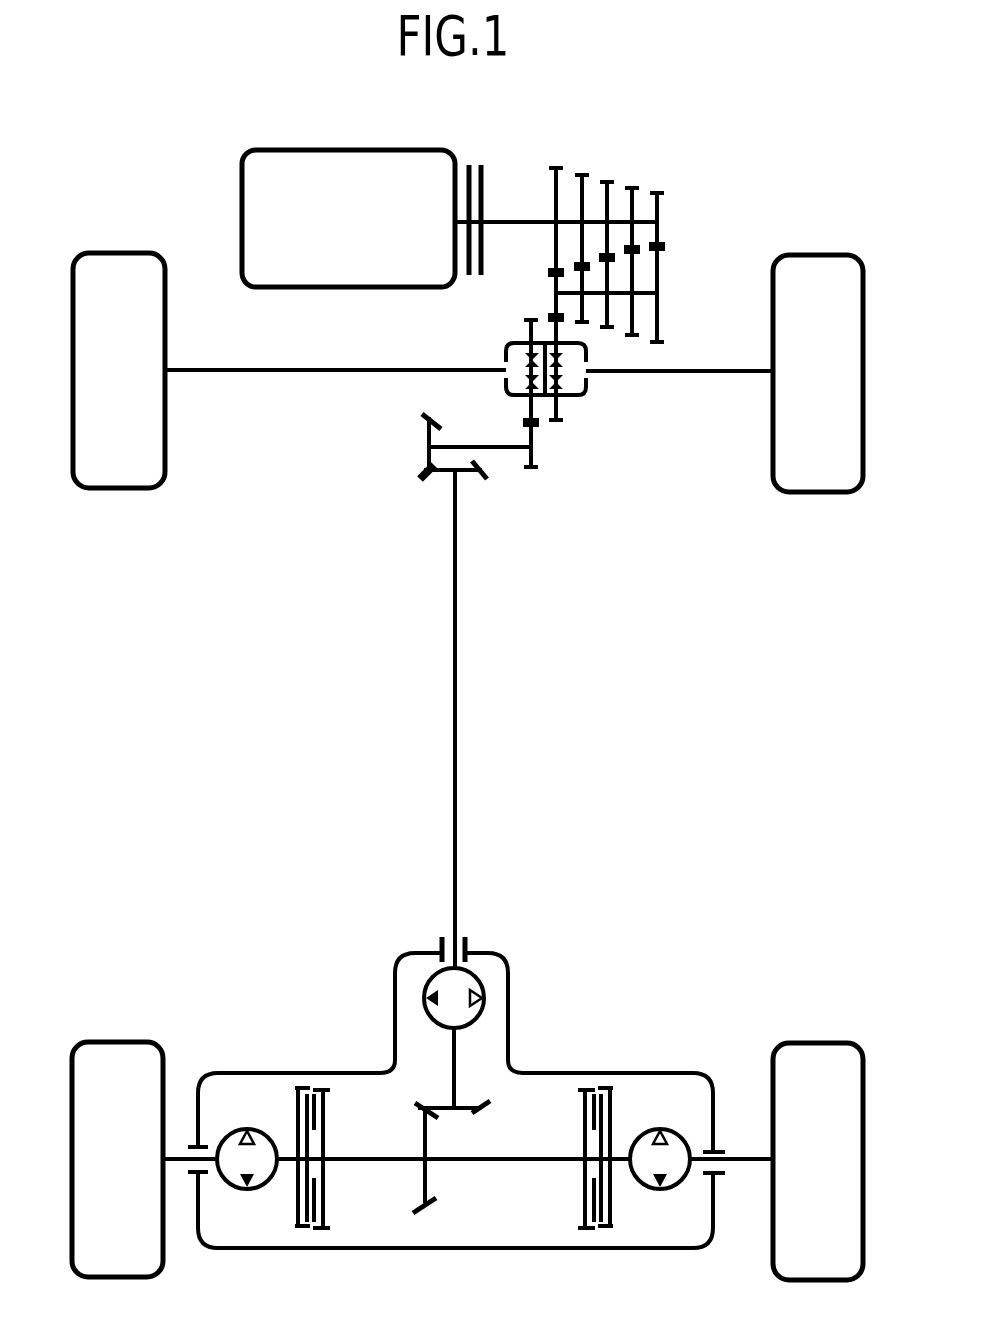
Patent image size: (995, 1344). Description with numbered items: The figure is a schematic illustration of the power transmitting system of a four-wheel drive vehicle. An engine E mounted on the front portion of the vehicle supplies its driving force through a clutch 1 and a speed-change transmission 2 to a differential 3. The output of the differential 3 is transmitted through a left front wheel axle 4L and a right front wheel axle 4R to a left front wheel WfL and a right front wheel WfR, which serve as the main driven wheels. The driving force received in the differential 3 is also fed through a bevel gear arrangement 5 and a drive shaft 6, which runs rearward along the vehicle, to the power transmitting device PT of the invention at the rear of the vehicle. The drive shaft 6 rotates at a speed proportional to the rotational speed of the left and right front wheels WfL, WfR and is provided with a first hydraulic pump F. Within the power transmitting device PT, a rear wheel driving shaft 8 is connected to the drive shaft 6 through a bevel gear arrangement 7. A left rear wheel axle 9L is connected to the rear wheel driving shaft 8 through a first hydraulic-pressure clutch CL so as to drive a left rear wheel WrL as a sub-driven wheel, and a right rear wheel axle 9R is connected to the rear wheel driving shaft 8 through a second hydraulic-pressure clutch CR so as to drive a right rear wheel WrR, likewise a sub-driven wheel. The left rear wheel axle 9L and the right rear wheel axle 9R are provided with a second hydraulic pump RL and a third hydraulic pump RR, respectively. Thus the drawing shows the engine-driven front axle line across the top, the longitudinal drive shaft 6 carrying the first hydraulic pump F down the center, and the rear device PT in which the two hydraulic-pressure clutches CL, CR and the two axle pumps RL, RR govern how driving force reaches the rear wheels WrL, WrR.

The engine E is at (339, 242).
The clutch 1 is at (484, 205).
The speed-change transmission 2 is at (674, 231).
The differential 3 is at (515, 333).
The left front wheel axle 4L is at (303, 369).
The right front wheel axle 4R is at (712, 371).
The left front wheel WfL is at (104, 392).
The right front wheel WfR is at (803, 392).
The bevel gear arrangement 5 is at (433, 494).
The drive shaft 6 is at (457, 745).
The power transmitting device PT is at (534, 1058).
The first hydraulic pump F is at (447, 1016).
The bevel gear arrangement 7 is at (429, 1084).
The rear wheel driving shaft 8 is at (522, 1158).
The left rear wheel axle 9L is at (172, 1144).
The right rear wheel axle 9R is at (744, 1158).
The second hydraulic pump RL is at (247, 1159).
The third hydraulic pump RR is at (660, 1159).
The first hydraulic-pressure clutch CL is at (318, 1230).
The second hydraulic-pressure clutch CR is at (597, 1230).
The left rear wheel WrL is at (103, 1180).
The right rear wheel WrR is at (803, 1180).